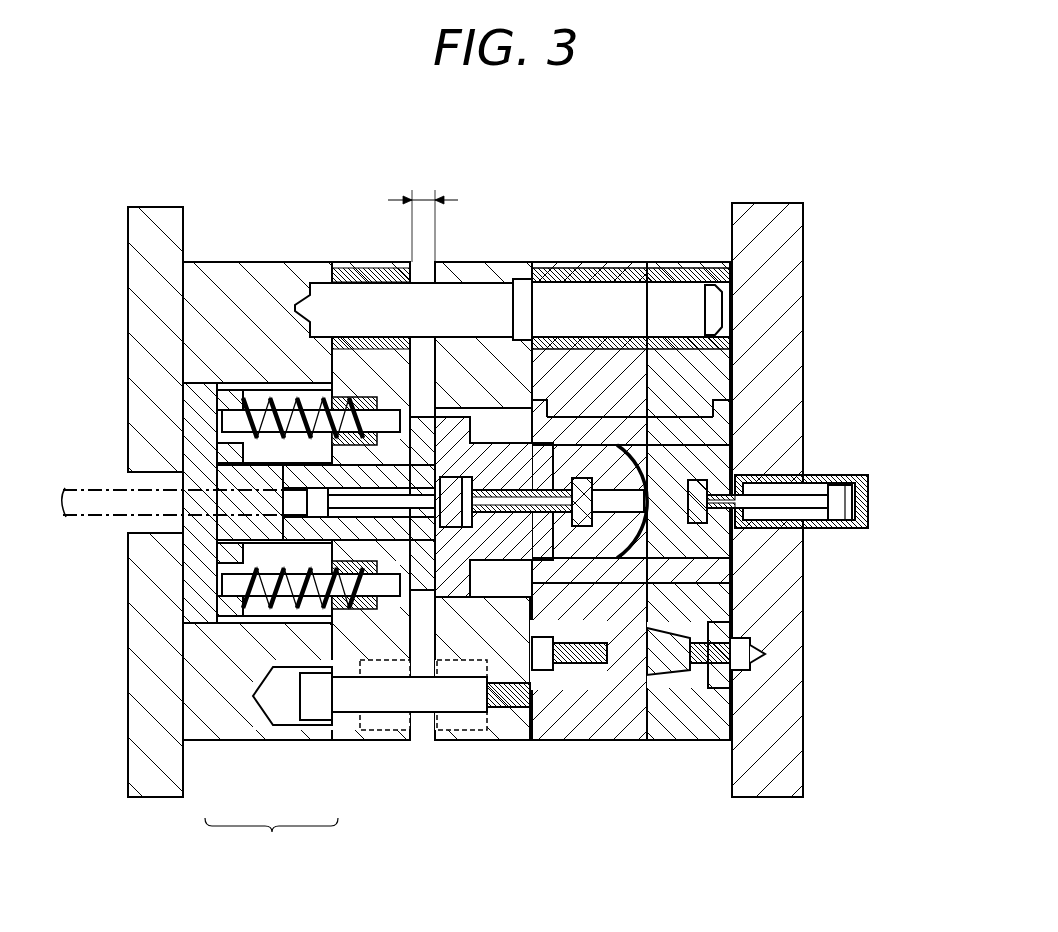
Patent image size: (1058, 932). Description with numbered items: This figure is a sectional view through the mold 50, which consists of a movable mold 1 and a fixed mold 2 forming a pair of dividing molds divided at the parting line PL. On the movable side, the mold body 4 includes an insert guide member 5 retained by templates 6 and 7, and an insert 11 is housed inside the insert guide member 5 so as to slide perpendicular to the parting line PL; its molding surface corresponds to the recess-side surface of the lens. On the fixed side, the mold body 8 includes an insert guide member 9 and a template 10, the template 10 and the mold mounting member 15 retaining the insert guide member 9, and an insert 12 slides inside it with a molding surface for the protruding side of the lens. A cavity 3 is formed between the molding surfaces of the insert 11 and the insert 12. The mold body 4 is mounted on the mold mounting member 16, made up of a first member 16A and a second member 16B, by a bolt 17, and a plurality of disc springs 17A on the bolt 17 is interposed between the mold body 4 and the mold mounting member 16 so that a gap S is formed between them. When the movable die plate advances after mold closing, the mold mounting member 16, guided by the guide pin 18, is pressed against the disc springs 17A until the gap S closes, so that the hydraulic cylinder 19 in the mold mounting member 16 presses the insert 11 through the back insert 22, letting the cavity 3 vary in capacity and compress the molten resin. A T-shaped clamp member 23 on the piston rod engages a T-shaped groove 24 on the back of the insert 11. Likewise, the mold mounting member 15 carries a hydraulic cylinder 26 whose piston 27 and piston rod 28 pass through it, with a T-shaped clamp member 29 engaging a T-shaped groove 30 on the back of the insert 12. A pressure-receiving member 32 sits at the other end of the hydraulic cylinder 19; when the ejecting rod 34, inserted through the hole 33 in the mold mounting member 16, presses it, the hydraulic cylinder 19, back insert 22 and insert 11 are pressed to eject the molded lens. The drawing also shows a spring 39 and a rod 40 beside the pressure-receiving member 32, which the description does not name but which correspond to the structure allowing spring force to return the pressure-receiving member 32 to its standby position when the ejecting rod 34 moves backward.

The movable mold 1 is at (468, 836).
The fixed mold 2 is at (730, 822).
The cavity 3 is at (700, 525).
The mold body 4 is at (558, 720).
The insert guide member 5 is at (612, 430).
The template 6 is at (613, 720).
The template 7 is at (512, 700).
The mold body 8 is at (697, 707).
The insert guide member 9 is at (688, 430).
The template 10 is at (670, 707).
The insert 11 is at (578, 457).
The insert 12 is at (668, 440).
The mold mounting member 15 is at (770, 737).
The mold mounting member 16 is at (271, 837).
The first member 16A is at (235, 715).
The second member 16B is at (343, 740).
The bolt 17 is at (349, 700).
The disc springs 17A is at (382, 718).
The guide pin 18 is at (488, 316).
The hydraulic cylinder 19 is at (282, 523).
The back insert 22 is at (508, 540).
The T-shaped clamp member 23 is at (583, 650).
The T-shaped groove 24 is at (700, 443).
The hydraulic cylinder 26 is at (870, 503).
The piston 27 is at (843, 502).
The piston rod 28 is at (783, 502).
The T-shaped clamp member 29 is at (645, 540).
The T-shaped groove 30 is at (594, 502).
The pressure-receiving member 32 is at (198, 427).
The hole 33 is at (153, 533).
The ejecting rod 34 is at (108, 492).
The spring 39 is at (258, 410).
The guide rod 40 is at (297, 408).
The mold 50 is at (126, 822).
The gap S is at (423, 451).
The parting line PL is at (643, 561).